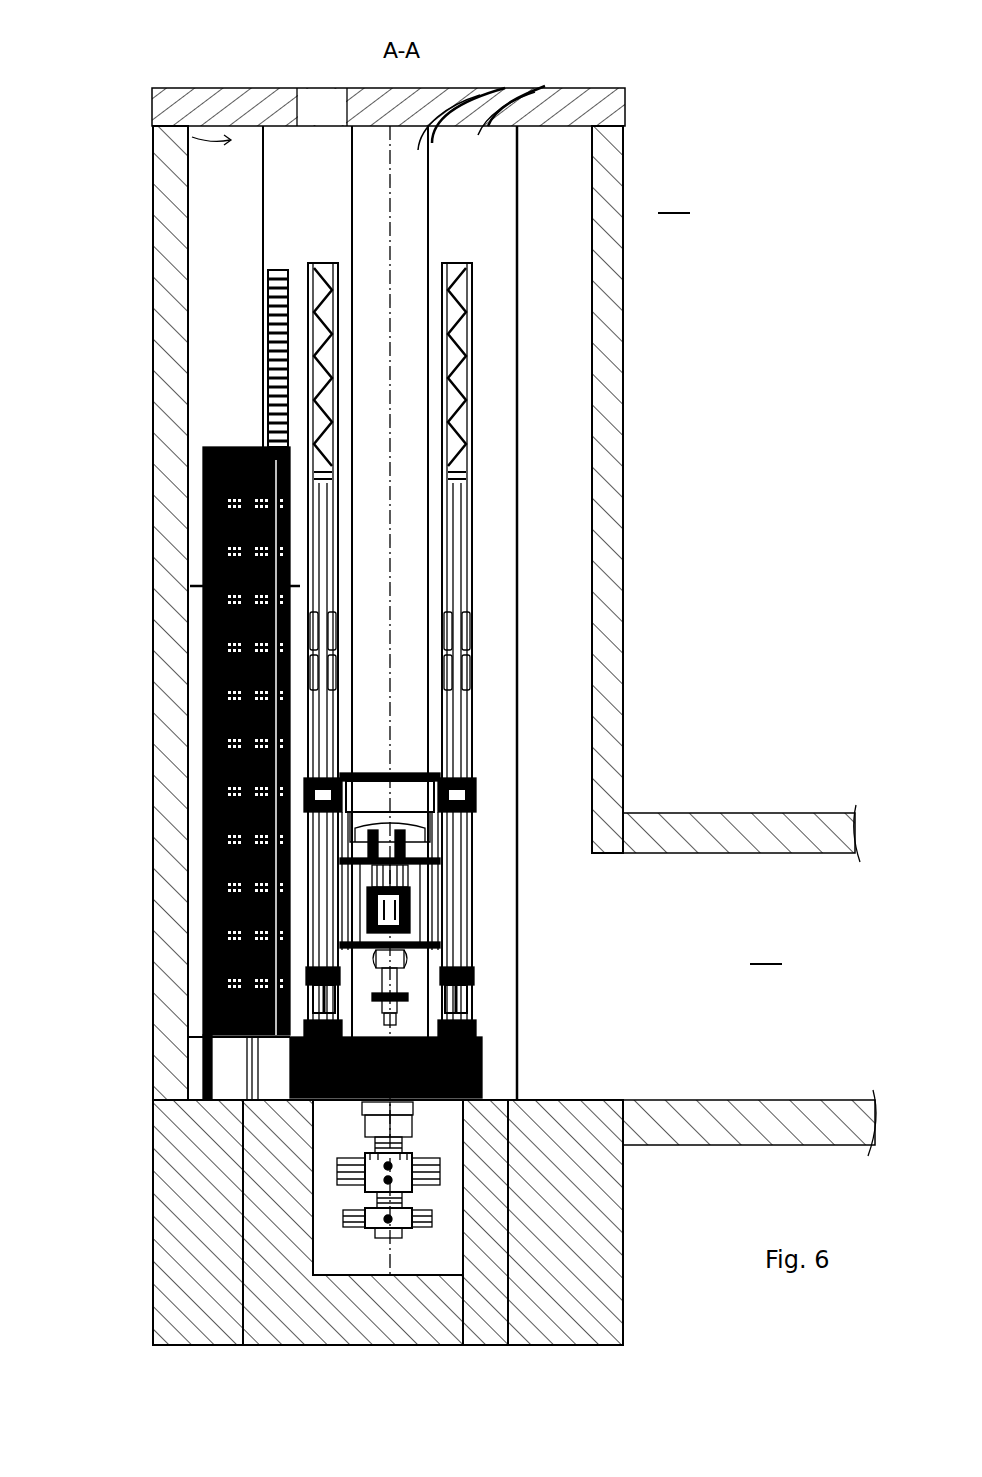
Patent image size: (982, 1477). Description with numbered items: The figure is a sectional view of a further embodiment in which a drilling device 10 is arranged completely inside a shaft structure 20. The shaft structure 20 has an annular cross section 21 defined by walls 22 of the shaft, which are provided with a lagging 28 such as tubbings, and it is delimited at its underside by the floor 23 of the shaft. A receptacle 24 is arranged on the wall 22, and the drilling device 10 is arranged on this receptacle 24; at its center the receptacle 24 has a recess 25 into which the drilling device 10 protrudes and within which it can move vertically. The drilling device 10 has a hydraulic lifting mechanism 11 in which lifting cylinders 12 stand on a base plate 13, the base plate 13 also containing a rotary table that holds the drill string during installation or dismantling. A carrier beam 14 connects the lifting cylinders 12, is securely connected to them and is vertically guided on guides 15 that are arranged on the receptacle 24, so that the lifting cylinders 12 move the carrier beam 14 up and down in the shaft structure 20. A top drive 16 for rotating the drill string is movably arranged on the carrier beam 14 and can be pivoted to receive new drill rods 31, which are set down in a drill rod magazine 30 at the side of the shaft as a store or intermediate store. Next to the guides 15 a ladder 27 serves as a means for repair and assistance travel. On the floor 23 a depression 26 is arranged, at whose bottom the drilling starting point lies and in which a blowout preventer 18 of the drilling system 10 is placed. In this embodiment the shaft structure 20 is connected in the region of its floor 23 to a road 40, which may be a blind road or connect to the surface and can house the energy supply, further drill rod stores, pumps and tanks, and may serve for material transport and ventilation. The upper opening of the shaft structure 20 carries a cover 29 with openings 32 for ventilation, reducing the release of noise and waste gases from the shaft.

The drilling device 10 is at (504, 882).
The hydraulic lifting mechanism 11 is at (380, 758).
The lifting cylinders 12 is at (452, 693).
The base plate 13 is at (290, 1070).
The carrier beam 14 is at (402, 793).
The guides 15 is at (326, 390).
The top drive 16 is at (365, 988).
The blowout preventer 18 is at (337, 1170).
The shaft structure 20 is at (674, 199).
The annular cross section 21 is at (162, 95).
The walls 22 is at (600, 560).
The floor 23 is at (537, 1102).
The receptacle 24 is at (483, 157).
The recess 25 is at (468, 82).
The depression 26 is at (443, 1249).
The ladder 27 is at (280, 306).
The lagging 28 is at (607, 408).
The cover 29 is at (607, 108).
The drill rod magazine 30 is at (205, 572).
The drill rods 31 is at (200, 884).
The openings 32 is at (318, 97).
The road 40 is at (766, 950).